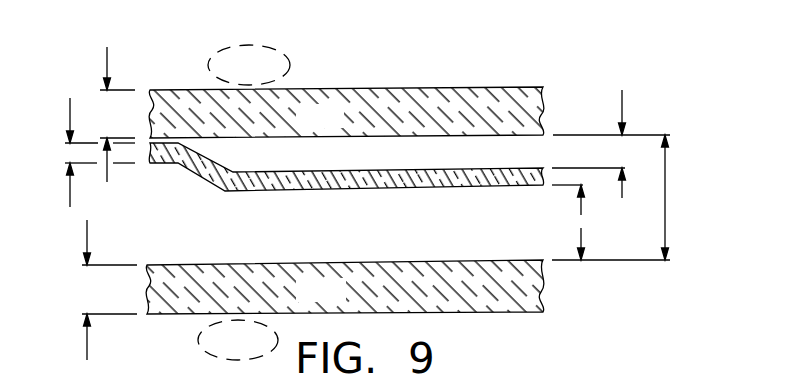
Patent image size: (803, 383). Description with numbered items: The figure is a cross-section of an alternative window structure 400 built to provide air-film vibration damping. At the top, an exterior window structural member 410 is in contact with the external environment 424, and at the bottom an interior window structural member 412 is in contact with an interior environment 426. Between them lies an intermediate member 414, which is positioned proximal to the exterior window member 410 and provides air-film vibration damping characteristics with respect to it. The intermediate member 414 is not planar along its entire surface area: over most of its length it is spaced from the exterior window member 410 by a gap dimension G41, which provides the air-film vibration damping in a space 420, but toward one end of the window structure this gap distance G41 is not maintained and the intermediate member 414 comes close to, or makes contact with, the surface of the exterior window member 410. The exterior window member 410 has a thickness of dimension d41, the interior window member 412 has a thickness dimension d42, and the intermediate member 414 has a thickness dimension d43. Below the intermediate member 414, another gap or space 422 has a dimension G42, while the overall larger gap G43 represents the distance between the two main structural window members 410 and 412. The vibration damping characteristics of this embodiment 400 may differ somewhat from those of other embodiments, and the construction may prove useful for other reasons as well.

The window structure 400 is at (546, 55).
The exterior window structural member 410 is at (340, 125).
The interior window structural member 412 is at (342, 299).
The intermediate member 414 is at (322, 191).
The space 420 is at (513, 150).
The gap 422 is at (513, 243).
The external environment 424 is at (249, 65).
The interior environment 426 is at (238, 340).
The thickness dimension of exterior window member d41 is at (107, 50).
The thickness dimension of interior window member d42 is at (87, 345).
The thickness dimension of intermediate member d43 is at (70, 195).
The gap dimension G41 is at (623, 97).
The gap dimension G42 is at (582, 222).
The overall gap G43 is at (666, 190).